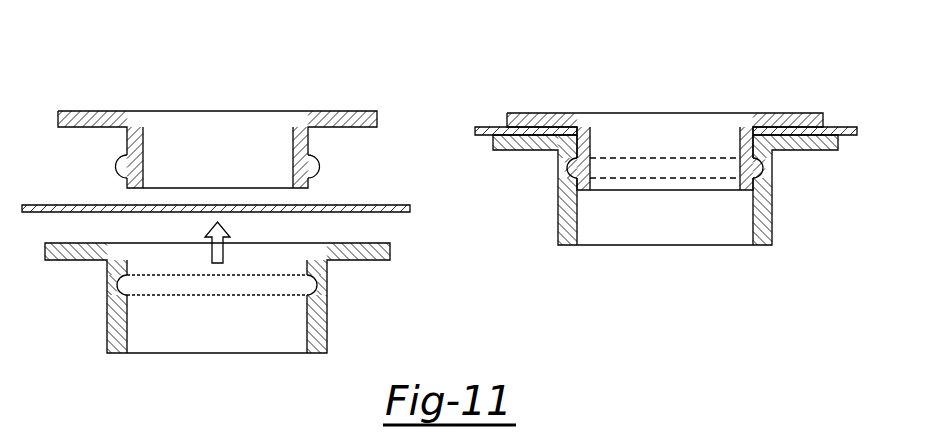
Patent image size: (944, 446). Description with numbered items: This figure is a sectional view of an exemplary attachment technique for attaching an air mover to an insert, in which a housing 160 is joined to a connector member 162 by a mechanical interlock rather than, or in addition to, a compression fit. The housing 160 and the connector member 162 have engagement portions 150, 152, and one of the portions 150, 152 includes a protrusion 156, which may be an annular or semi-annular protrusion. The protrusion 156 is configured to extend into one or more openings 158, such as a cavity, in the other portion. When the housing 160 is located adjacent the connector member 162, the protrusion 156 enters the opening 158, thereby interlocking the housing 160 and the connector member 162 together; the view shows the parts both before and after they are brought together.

The engagement portion 150 is at (318, 347).
The engagement portion 152 is at (303, 143).
The protrusion 156 is at (319, 167).
The opening 158 is at (303, 290).
The housing 160 is at (470, 276).
The connector member 162 is at (459, 115).